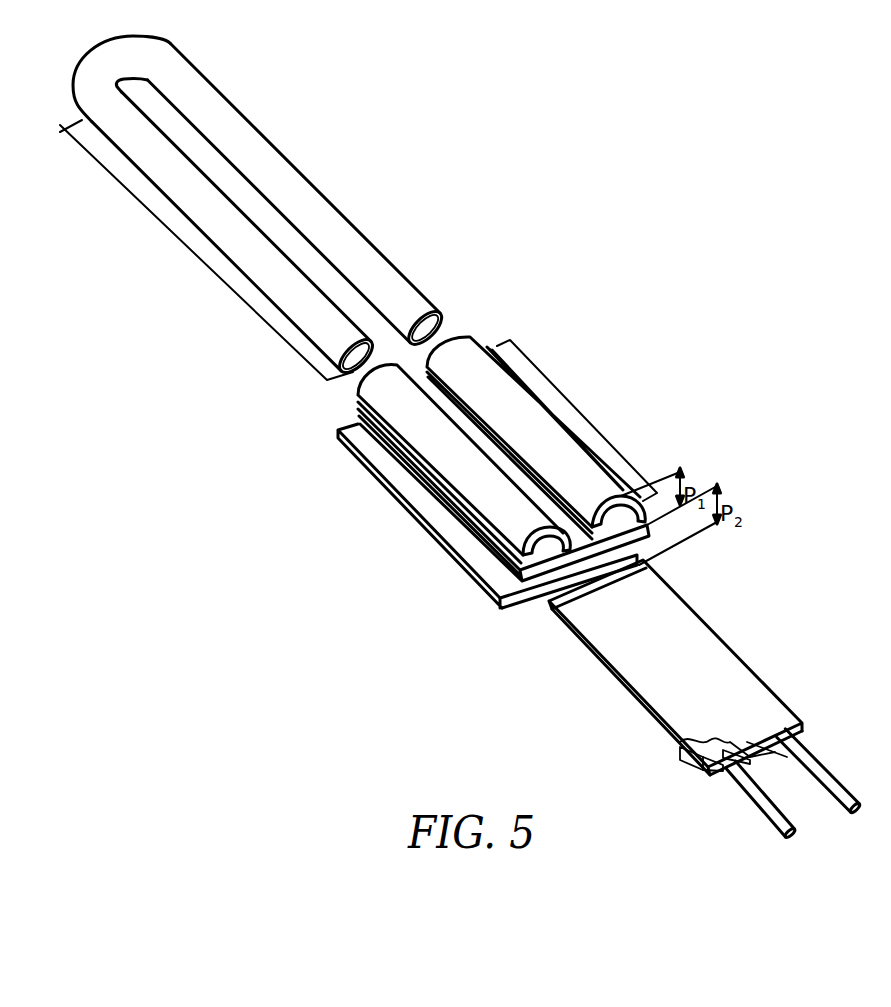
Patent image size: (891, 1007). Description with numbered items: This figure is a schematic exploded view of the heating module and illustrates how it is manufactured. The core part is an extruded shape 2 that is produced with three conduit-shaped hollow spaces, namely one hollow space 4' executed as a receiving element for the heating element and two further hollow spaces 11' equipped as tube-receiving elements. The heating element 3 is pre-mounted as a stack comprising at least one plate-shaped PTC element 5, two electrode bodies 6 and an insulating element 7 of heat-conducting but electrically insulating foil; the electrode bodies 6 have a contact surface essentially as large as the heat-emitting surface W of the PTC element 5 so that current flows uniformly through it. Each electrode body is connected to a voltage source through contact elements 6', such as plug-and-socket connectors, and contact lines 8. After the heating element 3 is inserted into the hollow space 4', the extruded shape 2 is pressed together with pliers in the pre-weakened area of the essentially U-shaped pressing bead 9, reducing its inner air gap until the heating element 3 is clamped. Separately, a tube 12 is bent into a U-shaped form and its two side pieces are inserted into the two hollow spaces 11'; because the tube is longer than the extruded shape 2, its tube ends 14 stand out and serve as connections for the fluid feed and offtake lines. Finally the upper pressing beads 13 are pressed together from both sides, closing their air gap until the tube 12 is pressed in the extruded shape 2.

The extruded shape 2 is at (517, 417).
The heating element 3 is at (631, 716).
The hollow space 4' is at (567, 625).
The PTC element 5 is at (683, 758).
The electrode bodies 6 is at (690, 793).
The contact elements 6' is at (723, 789).
The insulating element 7 is at (748, 757).
The contact lines 8 is at (815, 765).
The pressing bead 9 is at (497, 611).
The hollow spaces 11' is at (503, 502).
The tube 12 is at (233, 133).
The upper pressing beads 13 is at (356, 406).
The tube ends 14 is at (445, 310).
The heat-emitting surface W is at (675, 637).